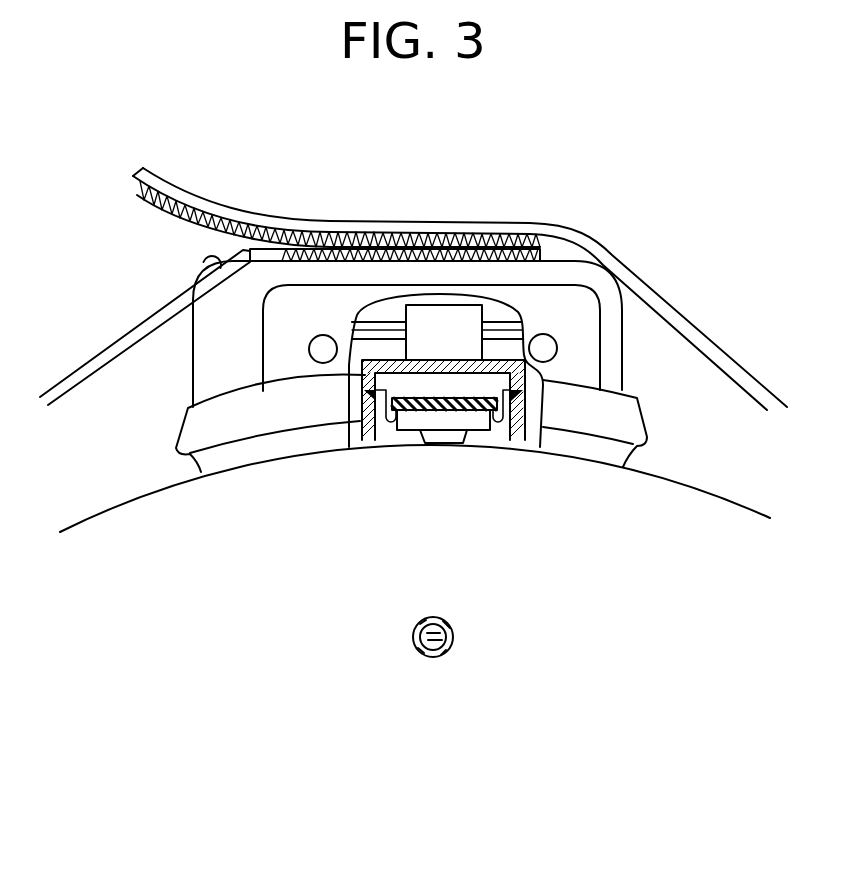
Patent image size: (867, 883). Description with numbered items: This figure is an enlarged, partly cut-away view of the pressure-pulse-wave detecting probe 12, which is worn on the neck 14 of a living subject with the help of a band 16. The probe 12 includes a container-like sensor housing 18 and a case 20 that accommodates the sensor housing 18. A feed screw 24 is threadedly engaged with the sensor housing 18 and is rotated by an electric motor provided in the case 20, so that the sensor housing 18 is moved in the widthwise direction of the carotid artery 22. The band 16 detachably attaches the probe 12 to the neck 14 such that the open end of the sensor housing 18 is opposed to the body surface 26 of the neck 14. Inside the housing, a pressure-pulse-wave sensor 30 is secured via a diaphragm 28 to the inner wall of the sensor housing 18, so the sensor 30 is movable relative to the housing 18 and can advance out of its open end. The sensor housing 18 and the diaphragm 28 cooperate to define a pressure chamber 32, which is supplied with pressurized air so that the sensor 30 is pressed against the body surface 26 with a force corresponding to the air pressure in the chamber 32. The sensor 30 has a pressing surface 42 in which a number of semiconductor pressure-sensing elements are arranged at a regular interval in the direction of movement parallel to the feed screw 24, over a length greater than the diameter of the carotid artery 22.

The pressure-pulse-wave detecting probe 12 is at (110, 170).
The neck 14 is at (147, 508).
The band 16 is at (106, 350).
The sensor housing 18 is at (530, 368).
The case 20 is at (560, 270).
The carotid artery 22 is at (432, 674).
The feed screw 24 is at (513, 325).
The body surface 26 is at (682, 482).
The diaphragm 28 is at (500, 440).
The pressure-pulse-wave sensor 30 is at (418, 420).
The pressure chamber 32 is at (484, 397).
The pressing surface 42 is at (432, 445).